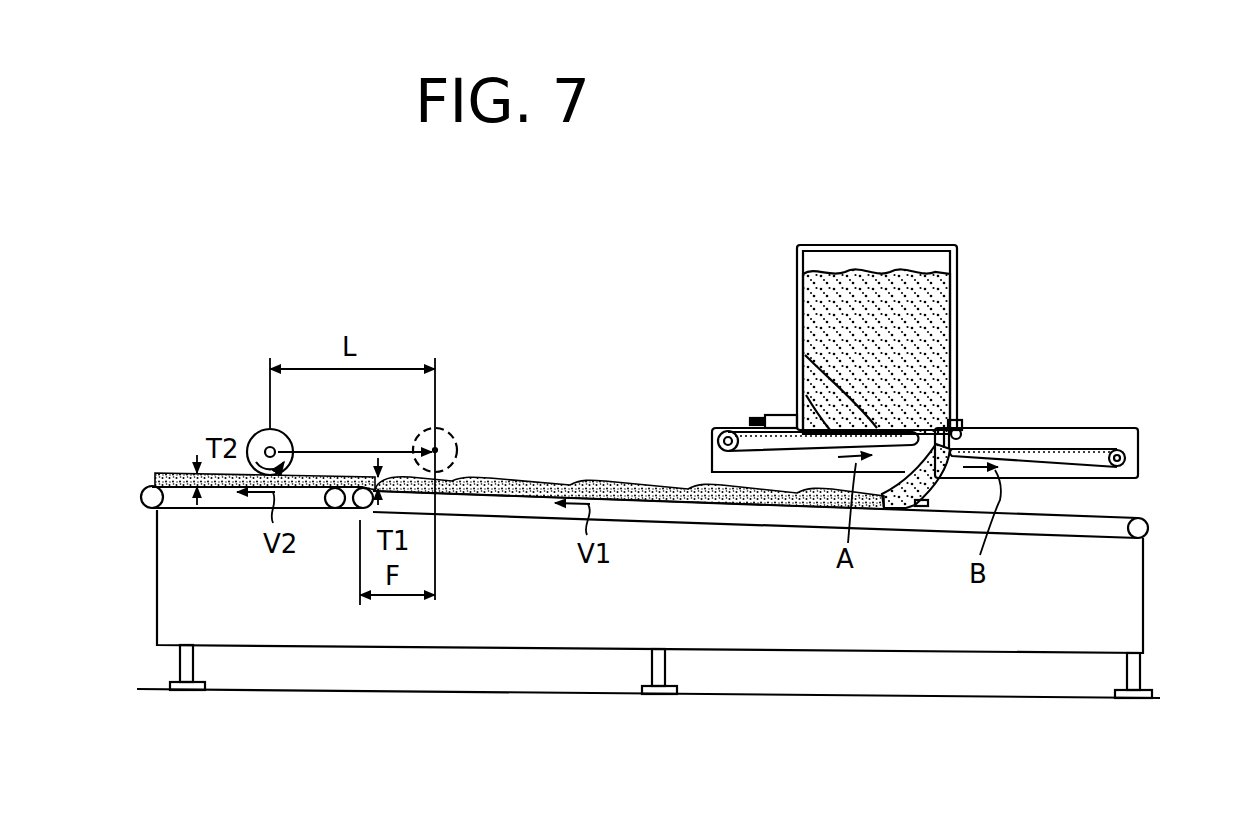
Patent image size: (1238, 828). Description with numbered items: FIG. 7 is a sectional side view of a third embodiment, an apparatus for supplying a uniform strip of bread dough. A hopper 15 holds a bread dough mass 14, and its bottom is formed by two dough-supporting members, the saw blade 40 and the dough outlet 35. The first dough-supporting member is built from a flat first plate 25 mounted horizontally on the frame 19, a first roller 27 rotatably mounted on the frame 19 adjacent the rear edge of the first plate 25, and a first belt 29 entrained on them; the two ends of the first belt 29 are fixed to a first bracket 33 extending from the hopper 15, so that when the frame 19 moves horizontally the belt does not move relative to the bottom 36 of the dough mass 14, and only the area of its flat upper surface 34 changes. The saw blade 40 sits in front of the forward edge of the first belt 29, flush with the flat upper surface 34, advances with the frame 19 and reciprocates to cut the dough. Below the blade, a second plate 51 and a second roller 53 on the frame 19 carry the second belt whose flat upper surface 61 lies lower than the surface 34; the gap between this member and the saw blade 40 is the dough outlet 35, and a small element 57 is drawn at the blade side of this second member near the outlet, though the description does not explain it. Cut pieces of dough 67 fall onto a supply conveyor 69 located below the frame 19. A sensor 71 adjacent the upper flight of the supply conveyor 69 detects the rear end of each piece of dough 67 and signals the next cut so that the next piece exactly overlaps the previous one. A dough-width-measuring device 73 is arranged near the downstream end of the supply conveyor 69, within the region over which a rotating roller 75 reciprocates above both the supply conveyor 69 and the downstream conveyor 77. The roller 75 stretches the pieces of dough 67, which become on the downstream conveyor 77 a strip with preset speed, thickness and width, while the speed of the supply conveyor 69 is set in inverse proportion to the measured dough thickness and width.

The bread dough mass 14 is at (878, 292).
The hopper 15 is at (957, 260).
The frame 19 is at (1078, 428).
The first plate 25 is at (770, 447).
The first roller 27 is at (730, 470).
The first belt 29 is at (815, 447).
The first bracket 33 is at (752, 420).
The flat upper surface 34 is at (806, 395).
The dough outlet 35 is at (933, 478).
The bottom of the bread dough mass 36 is at (805, 355).
The saw blade 40 is at (958, 418).
The second plate 51 is at (1007, 470).
The second roller 53 is at (1138, 458).
The roller 57 is at (959, 426).
The flat upper surface 61 is at (951, 428).
The pieces of dough 67 is at (520, 478).
The supply conveyor 69 is at (1150, 516).
The sensor 71 is at (933, 510).
The dough-width-measuring device 73 is at (394, 478).
The roller 75 is at (262, 432).
The downstream conveyor 77 is at (228, 510).